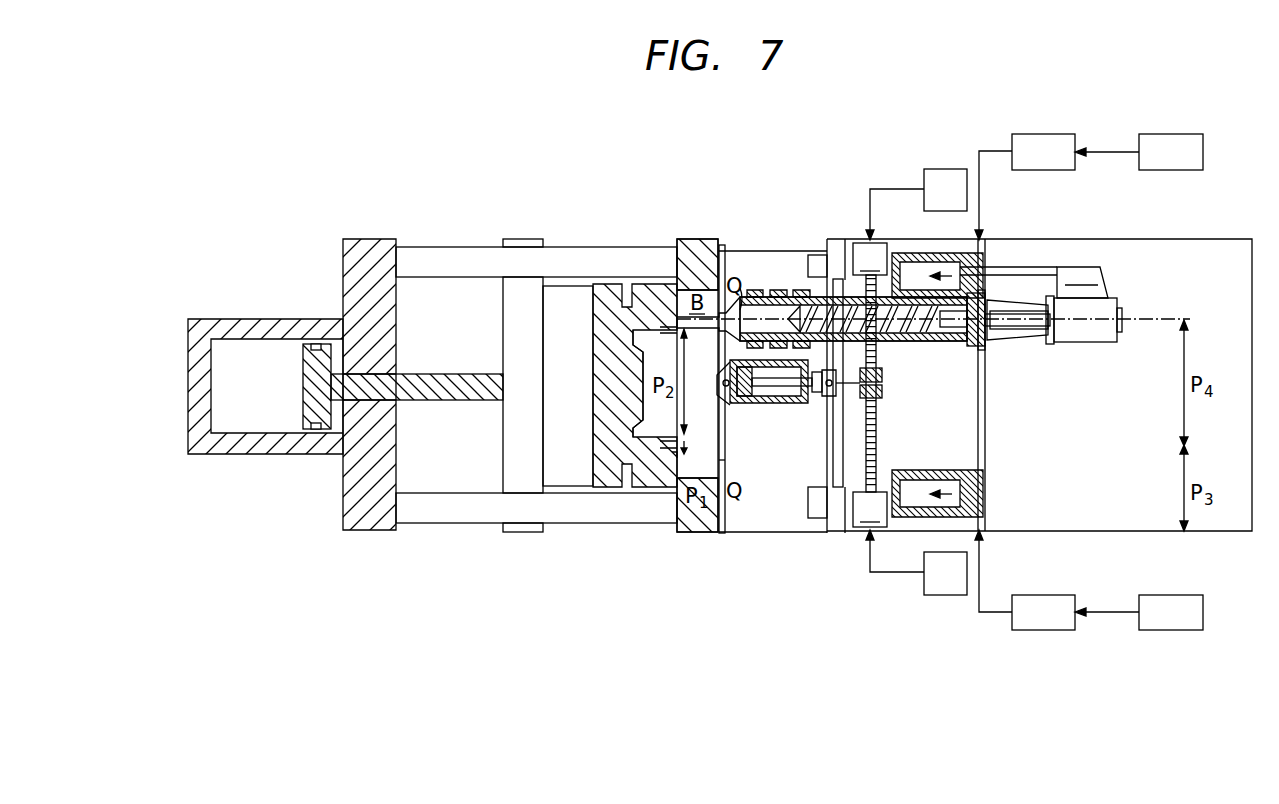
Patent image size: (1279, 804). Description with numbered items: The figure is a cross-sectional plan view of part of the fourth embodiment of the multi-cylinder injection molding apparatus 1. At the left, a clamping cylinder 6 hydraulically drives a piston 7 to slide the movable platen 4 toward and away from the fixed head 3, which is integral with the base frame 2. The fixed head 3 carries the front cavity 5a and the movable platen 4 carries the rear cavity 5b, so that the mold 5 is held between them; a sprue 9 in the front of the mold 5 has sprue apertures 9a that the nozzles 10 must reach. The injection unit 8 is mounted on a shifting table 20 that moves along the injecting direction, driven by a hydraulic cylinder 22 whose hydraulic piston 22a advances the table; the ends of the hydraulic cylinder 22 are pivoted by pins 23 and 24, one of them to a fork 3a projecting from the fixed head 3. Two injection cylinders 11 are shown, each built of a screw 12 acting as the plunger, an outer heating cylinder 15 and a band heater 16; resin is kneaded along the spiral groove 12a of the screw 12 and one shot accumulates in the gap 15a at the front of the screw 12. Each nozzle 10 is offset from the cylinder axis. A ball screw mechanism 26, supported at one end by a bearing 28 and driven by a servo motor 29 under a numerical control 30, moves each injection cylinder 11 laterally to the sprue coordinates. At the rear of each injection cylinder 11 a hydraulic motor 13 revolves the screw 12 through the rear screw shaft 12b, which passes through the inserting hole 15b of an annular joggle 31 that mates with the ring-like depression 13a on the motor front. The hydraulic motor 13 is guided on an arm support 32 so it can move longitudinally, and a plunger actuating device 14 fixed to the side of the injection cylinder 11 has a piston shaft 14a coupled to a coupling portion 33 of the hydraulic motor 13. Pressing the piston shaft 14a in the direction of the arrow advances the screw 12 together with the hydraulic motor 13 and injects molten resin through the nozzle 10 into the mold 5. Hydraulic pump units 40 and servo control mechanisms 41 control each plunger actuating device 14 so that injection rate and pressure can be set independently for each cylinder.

The injection molding apparatus 1 is at (835, 185).
The base frame 2 is at (766, 251).
The fixed head 3 is at (694, 239).
The fork 3a is at (728, 367).
The movable platen 4 is at (527, 239).
The mold 5 is at (610, 350).
The front cavity 5a is at (648, 284).
The rear cavity 5b is at (573, 286).
The clamping cylinder 6 is at (233, 319).
The piston 7 is at (303, 387).
The injection unit 8 is at (1042, 239).
The sprue 9 is at (677, 334).
The sprue aperture 9a is at (676, 458).
The nozzle 10 is at (655, 360).
The injection cylinder 11 is at (902, 352).
The screw 12 is at (925, 432).
The spiral groove 12a is at (950, 434).
The rear screw shaft 12b is at (1030, 328).
The hydraulic motor 13 is at (1114, 340).
The ring-like depression 13a is at (1050, 342).
The plunger actuating device 14 is at (910, 253).
The piston shaft 14a is at (1008, 268).
The heating cylinder 15 is at (754, 291).
The gap 15a is at (723, 263).
The inserting hole 15b is at (985, 345).
The band heater 16 is at (780, 297).
The shifting table 20 is at (1157, 397).
The hydraulic cylinder 22 is at (745, 400).
The hydraulic piston 22a is at (722, 462).
The pin 23 is at (722, 383).
The pin 24 is at (838, 487).
The ball screw mechanism 26 is at (868, 275).
The bearing 28 is at (830, 251).
The servo motor 29 is at (870, 385).
The numerical control 30 is at (945, 169).
The joggle 31 is at (987, 297).
The arm support 32 is at (1011, 336).
The coupling portion 33 is at (1106, 276).
The hydraulic pump unit 40 is at (1043, 133).
The servo control mechanism 41 is at (1169, 133).